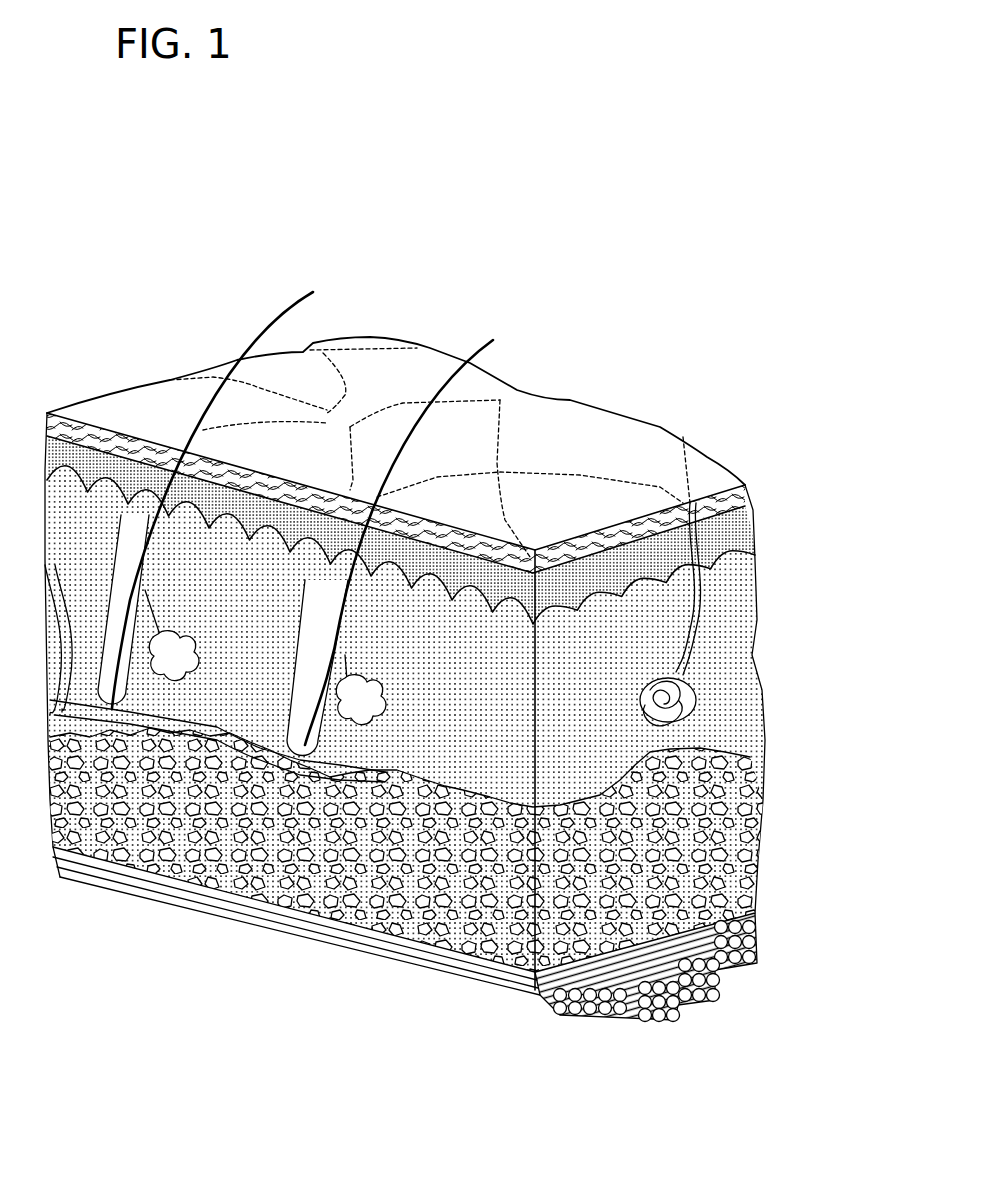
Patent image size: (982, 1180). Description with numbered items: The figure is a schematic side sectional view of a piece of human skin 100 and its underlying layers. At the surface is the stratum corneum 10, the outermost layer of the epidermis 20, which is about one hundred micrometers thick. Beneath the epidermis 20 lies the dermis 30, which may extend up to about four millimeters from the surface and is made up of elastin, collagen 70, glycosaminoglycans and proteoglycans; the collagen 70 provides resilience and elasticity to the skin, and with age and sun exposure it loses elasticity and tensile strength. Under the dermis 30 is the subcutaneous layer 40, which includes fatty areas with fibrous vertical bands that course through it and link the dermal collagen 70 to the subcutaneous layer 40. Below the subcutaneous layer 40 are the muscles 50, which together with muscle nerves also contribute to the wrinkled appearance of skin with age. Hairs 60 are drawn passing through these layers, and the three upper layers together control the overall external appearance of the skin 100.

The human skin 100 is at (748, 357).
The stratum corneum 10 is at (730, 478).
The epidermis 20 is at (743, 535).
The dermis 30 is at (750, 660).
The subcutaneous layer 40 is at (760, 813).
The muscles 50 is at (753, 933).
The hair 60 is at (292, 310).
The collagen 70 is at (50, 697).